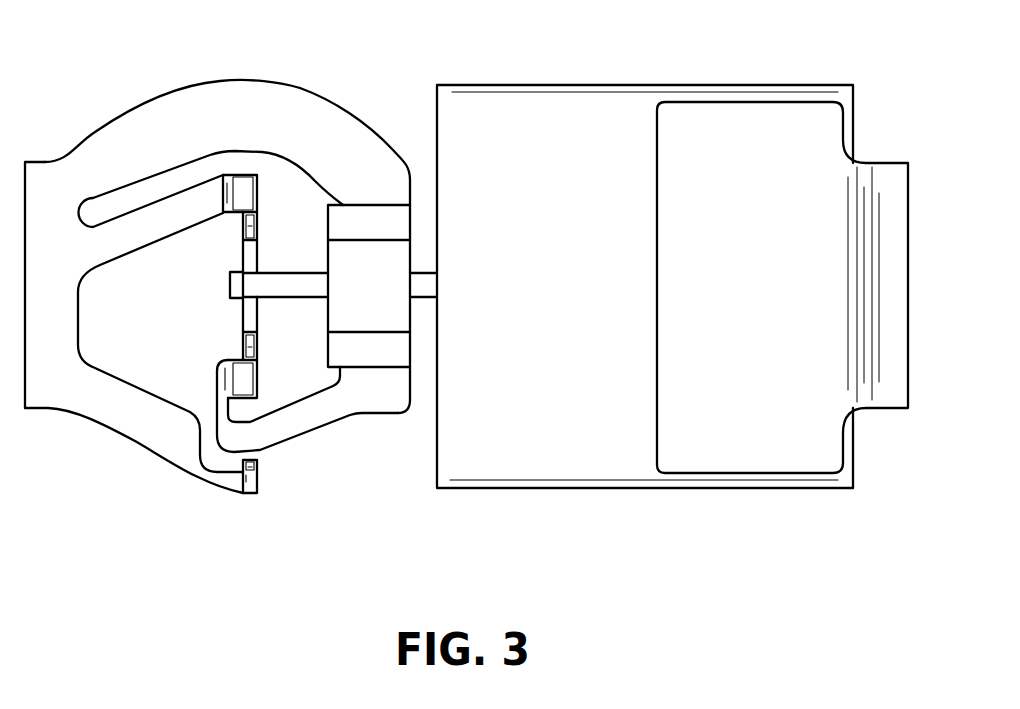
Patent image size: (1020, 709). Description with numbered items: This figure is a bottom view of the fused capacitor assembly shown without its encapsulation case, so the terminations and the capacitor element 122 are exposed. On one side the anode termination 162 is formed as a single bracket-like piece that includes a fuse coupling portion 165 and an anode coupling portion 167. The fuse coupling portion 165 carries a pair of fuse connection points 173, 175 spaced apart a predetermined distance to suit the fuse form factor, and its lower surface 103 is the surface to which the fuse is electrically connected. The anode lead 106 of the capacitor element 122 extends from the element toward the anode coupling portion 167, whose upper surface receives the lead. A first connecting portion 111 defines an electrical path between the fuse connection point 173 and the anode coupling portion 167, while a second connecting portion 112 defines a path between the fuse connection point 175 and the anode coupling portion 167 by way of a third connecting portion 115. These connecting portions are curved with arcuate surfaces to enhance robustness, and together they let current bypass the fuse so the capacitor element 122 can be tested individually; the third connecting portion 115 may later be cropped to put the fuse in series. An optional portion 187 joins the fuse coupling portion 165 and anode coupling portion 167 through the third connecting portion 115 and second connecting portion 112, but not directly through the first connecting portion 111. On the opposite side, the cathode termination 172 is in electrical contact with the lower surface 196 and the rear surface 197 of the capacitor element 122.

The anode termination 162 is at (225, 281).
The second connecting portion 112 is at (248, 97).
The fuse coupling portion 165 is at (394, 120).
The third connecting portion 115 is at (125, 238).
The optional portion 187 is at (98, 420).
The anode coupling portion 167 is at (221, 260).
The fuse connection point 173 is at (367, 393).
The first connecting portion 111 is at (245, 437).
The lower surface 103 is at (386, 403).
The fuse connection point 175 is at (362, 180).
The anode lead 106 is at (426, 297).
The lower surface 196 is at (505, 110).
The capacitor element 122 is at (638, 462).
The cathode termination 172 is at (874, 138).
The rear surface 197 is at (852, 482).